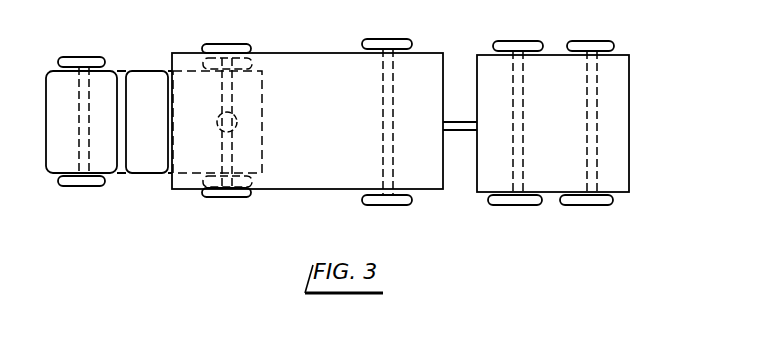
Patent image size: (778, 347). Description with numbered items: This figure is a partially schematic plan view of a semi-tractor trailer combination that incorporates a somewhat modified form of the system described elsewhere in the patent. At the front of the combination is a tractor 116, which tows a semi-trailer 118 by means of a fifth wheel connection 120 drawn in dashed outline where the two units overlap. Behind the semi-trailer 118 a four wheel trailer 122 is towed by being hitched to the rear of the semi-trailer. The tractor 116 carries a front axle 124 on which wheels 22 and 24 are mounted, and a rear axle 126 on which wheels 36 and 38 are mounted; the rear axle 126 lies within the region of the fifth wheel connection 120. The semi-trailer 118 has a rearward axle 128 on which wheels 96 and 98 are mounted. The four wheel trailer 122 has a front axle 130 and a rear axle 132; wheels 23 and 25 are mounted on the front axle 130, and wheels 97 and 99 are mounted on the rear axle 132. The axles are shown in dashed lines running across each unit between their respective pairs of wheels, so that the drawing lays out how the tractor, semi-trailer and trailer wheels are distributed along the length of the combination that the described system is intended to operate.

The wheel 22 is at (72, 187).
The wheel 23 is at (517, 206).
The wheel 24 is at (70, 56).
The wheel 25 is at (533, 40).
The wheel 36 is at (220, 198).
The wheel 38 is at (217, 44).
The wheel 96 is at (394, 206).
The wheel 97 is at (595, 206).
The wheel 98 is at (388, 38).
The wheel 99 is at (608, 40).
The tractor 116 is at (158, 52).
The semi-trailer 118 is at (305, 52).
The fifth wheel connection 120 is at (237, 121).
The four wheel trailer 122 is at (631, 127).
The front axle 124 is at (78, 95).
The rear axle 126 is at (221, 104).
The rearward axle 128 is at (396, 118).
The front axle 130 is at (526, 118).
The rear axle 132 is at (596, 137).